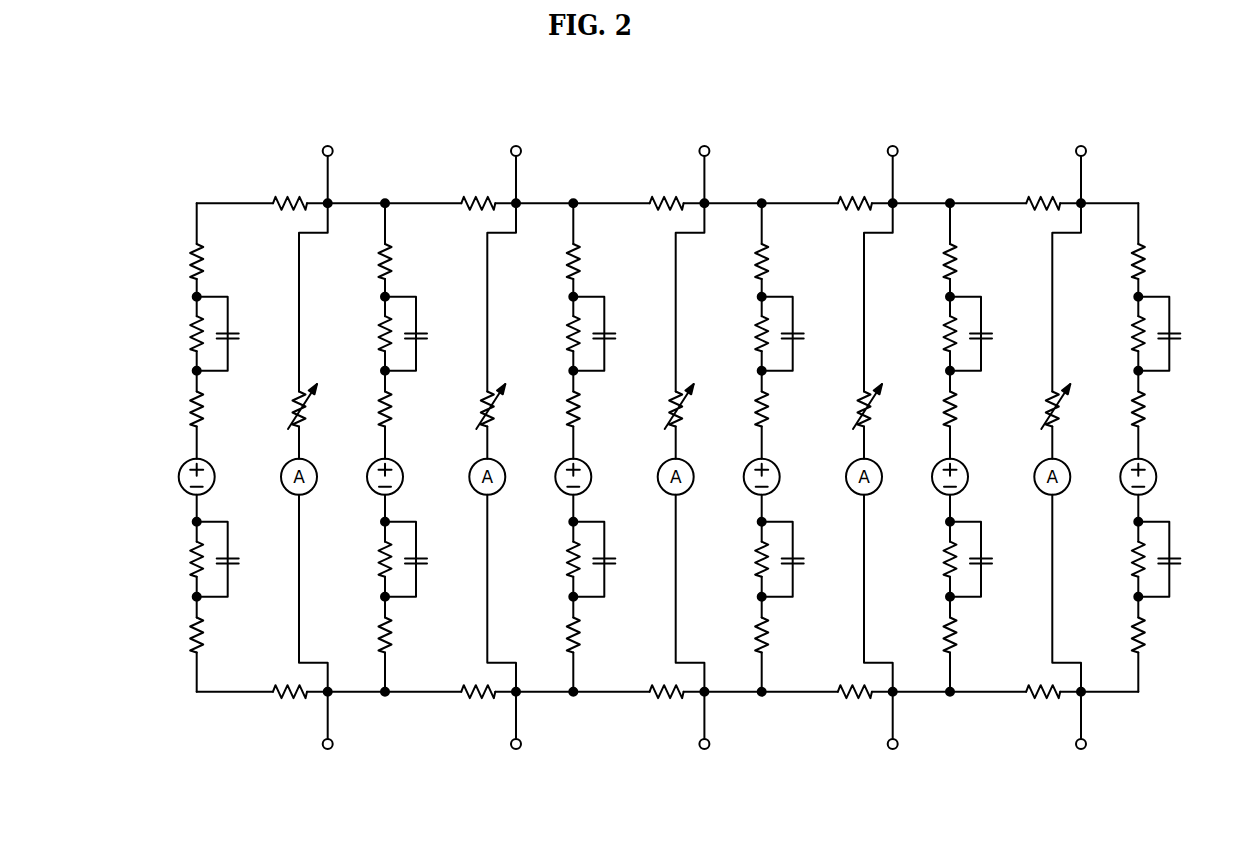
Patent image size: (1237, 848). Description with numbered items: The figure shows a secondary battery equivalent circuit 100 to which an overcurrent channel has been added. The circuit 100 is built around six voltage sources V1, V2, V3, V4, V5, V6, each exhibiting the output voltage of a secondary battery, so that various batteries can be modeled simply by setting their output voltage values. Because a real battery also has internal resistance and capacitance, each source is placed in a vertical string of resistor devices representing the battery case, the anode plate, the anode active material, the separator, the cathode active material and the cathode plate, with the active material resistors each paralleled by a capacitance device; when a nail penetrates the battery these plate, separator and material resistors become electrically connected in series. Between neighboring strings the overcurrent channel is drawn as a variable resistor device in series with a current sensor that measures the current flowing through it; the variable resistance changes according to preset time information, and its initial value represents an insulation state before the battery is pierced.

The secondary battery equivalent circuit 100 is at (261, 109).
The voltage source V1 is at (185, 477).
The voltage source V2 is at (373, 477).
The voltage source V3 is at (561, 477).
The voltage source V4 is at (750, 477).
The voltage source V5 is at (938, 477).
The voltage source V6 is at (1126, 477).